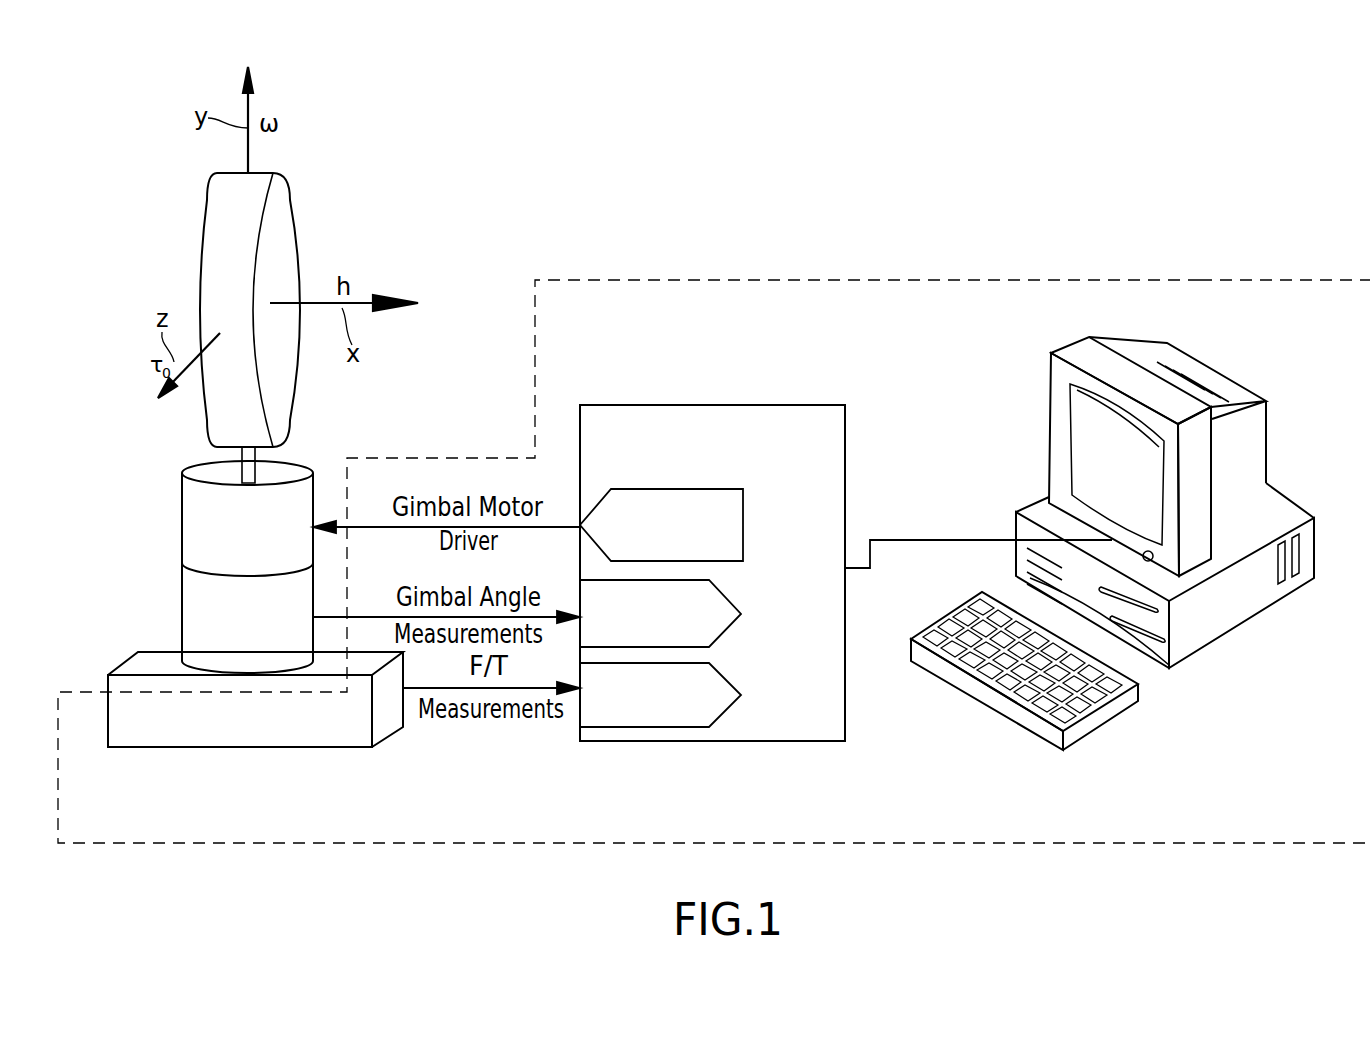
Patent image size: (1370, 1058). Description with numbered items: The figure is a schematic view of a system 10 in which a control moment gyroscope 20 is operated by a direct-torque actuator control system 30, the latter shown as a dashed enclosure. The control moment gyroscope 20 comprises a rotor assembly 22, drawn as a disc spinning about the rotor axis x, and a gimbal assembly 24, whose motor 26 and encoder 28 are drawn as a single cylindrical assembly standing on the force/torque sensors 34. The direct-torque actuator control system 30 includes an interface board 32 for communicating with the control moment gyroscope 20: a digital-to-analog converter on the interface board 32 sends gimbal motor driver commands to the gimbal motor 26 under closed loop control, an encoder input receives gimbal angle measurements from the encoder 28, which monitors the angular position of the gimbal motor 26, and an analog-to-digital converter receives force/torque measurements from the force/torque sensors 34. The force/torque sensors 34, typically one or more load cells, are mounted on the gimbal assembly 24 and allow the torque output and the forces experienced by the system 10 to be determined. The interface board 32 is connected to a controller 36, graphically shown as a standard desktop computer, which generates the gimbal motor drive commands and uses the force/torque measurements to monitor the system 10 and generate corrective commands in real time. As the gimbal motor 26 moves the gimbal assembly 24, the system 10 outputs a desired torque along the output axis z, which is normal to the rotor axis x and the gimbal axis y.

The system 10 is at (1265, 174).
The control moment gyroscope 20 is at (280, 210).
The rotor assembly 22 is at (280, 262).
The gimbal assembly 24 is at (243, 456).
The gimbal motor 26 is at (205, 520).
The encoder 28 is at (205, 630).
The direct-torque actuator control system 30 is at (1323, 278).
The interface board 32 is at (660, 423).
The force/torque sensors 34 is at (238, 736).
The controller 36 is at (1236, 606).